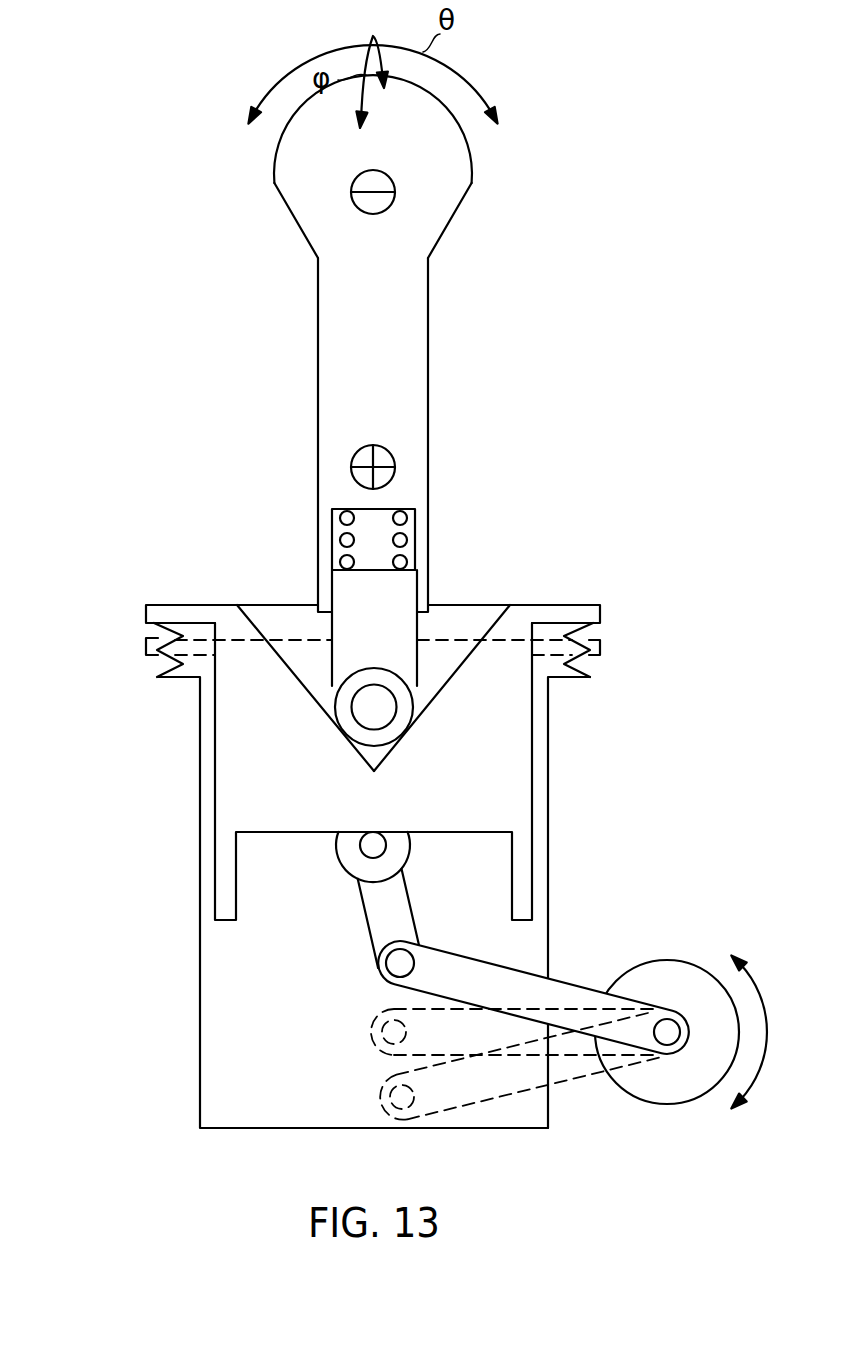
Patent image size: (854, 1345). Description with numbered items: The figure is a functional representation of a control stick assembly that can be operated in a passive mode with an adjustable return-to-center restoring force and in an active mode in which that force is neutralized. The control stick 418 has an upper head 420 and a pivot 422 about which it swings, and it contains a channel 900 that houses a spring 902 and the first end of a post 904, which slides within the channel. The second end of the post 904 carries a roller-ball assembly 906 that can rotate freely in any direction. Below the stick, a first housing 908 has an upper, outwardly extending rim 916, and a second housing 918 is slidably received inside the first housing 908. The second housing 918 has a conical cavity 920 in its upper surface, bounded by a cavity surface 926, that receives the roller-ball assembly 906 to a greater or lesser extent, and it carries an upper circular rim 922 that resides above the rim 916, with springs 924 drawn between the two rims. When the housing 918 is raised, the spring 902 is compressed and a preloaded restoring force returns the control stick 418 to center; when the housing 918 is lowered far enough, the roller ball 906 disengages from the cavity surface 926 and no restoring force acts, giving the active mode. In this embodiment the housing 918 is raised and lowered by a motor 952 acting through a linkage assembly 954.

The control stick 418 is at (340, 305).
The head 420 is at (474, 160).
The pivot 422 is at (365, 455).
The channel 900 is at (377, 507).
The spring 902 is at (404, 540).
The post 904 is at (402, 592).
The roller-ball assembly 906 is at (367, 712).
The first housing 908 is at (200, 706).
The rim 916 is at (576, 680).
The second housing 918 is at (518, 796).
The conical cavity 920 is at (311, 660).
The circular rim 922 is at (164, 612).
The spring 924 is at (146, 647).
The cavity surface 926 is at (438, 693).
The motor 952 is at (673, 970).
The linkage assembly 954 is at (455, 950).